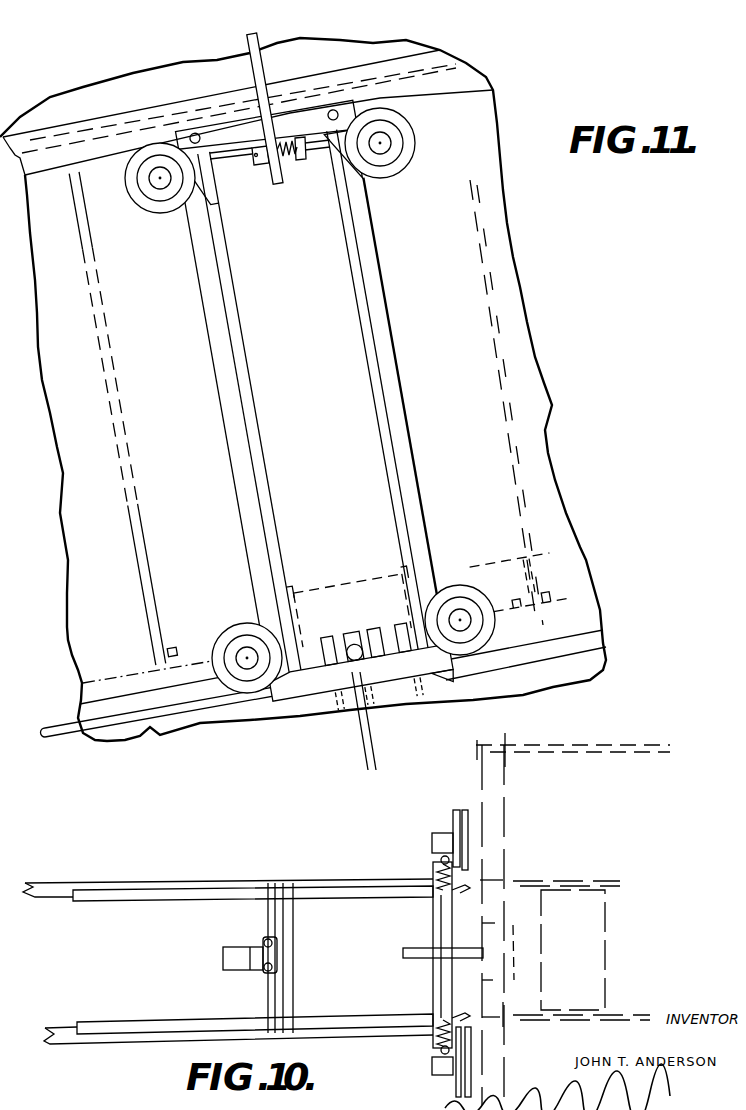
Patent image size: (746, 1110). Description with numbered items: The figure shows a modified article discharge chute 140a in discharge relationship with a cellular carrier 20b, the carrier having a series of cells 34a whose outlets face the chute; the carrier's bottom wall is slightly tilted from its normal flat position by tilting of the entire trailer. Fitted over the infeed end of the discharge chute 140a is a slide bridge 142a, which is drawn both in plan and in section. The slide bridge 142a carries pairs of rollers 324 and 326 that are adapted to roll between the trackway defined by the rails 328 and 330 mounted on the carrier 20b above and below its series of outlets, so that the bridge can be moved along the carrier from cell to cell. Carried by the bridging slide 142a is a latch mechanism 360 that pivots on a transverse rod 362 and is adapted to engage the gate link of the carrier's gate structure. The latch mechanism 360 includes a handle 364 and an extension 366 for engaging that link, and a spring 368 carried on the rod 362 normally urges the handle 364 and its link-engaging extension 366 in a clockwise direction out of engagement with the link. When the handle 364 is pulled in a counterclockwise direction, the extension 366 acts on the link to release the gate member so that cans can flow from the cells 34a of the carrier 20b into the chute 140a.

In FIG. 11, the carrier 20b is at (561, 548).
In FIG. 11, the cells 34a is at (199, 487).
In FIG. 10, the cells 34a is at (601, 810).
In FIG. 11, the discharge chute 140a is at (410, 381).
In FIG. 10, the discharge chute 140a is at (49, 877).
In FIG. 11, the slide bridge 142a is at (387, 230).
In FIG. 10, the slide bridge 142a is at (155, 900).
In FIG. 11, the rollers 324 is at (460, 585).
In FIG. 11, the rollers 326 is at (137, 208).
In FIG. 10, the rollers 326 is at (456, 807).
In FIG. 11, the rail 328 is at (143, 723).
In FIG. 11, the rail 330 is at (67, 180).
In FIG. 11, the latch mechanism 360 is at (280, 76).
In FIG. 11, the transverse rod 362 is at (236, 165).
In FIG. 11, the handle 364 is at (262, 58).
In FIG. 11, the extension 366 is at (272, 185).
In FIG. 11, the spring 368 is at (283, 160).